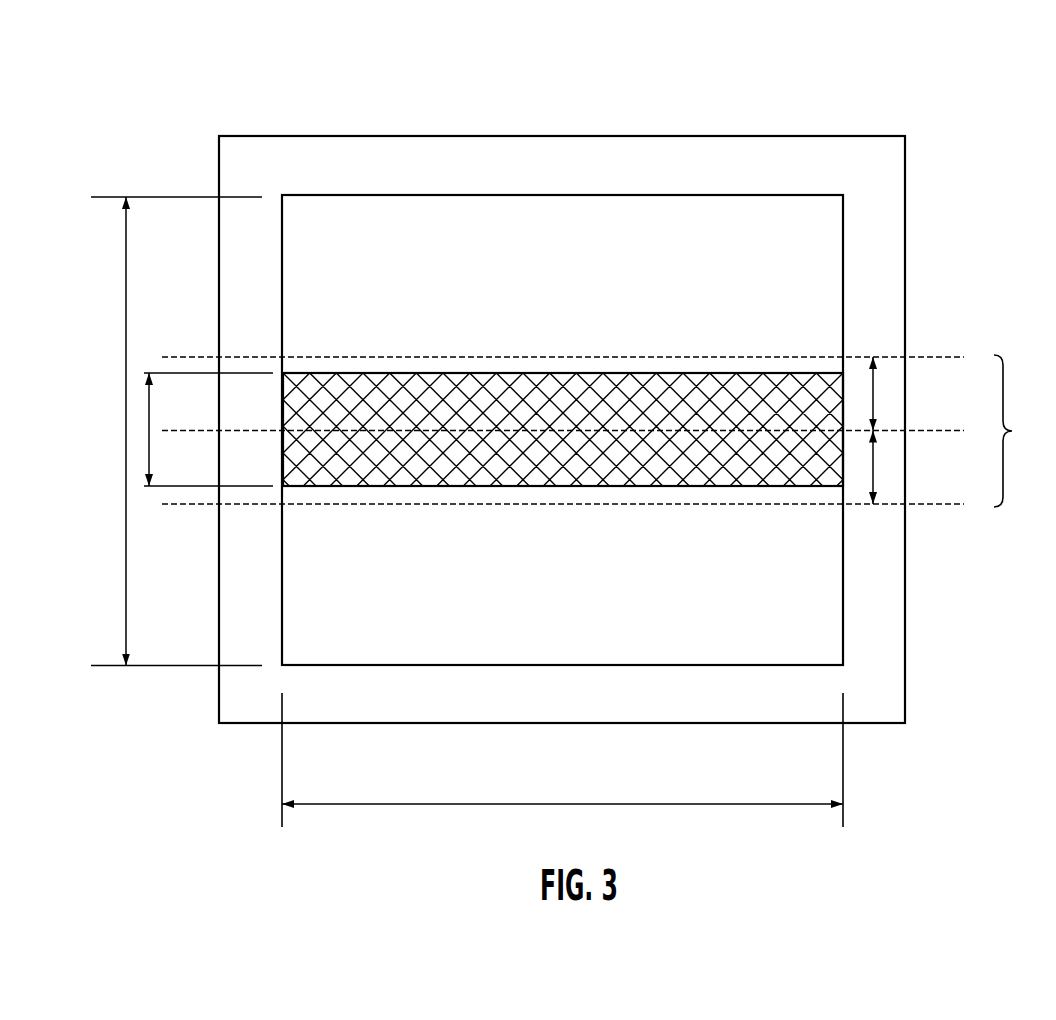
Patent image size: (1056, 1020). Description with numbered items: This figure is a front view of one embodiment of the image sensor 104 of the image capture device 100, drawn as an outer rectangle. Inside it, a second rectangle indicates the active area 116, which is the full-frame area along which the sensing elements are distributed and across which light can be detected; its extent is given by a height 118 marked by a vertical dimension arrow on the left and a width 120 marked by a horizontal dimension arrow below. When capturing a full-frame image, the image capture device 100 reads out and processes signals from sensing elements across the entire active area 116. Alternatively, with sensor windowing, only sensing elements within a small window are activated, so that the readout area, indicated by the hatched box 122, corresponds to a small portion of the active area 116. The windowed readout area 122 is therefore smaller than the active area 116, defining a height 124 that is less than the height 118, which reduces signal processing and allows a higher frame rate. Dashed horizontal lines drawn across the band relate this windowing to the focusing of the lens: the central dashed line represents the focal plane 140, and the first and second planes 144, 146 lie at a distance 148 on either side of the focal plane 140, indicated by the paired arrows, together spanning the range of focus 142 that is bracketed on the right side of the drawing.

The image capture device 100 is at (942, 105).
The image sensor 104 is at (906, 192).
The active area 116 is at (843, 248).
The height of the active area 118 is at (125, 413).
The width of the active area 120 is at (573, 805).
The windowed readout area 122 is at (305, 373).
The height of the readout area 124 is at (149, 407).
The focal plane 140 is at (948, 431).
The range of focus 142 is at (1019, 431).
The first plane 144 is at (935, 504).
The second plane 146 is at (940, 357).
The distance from the focal plane 148 is at (873, 390).